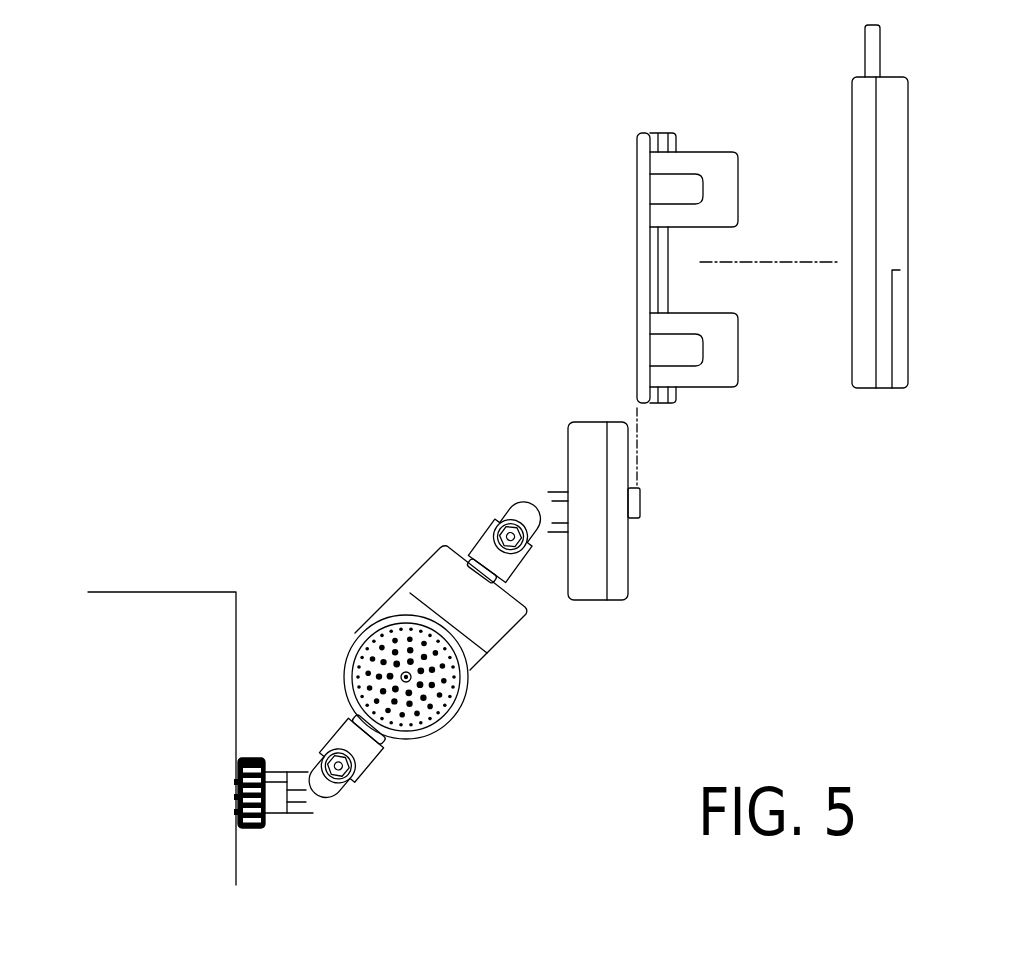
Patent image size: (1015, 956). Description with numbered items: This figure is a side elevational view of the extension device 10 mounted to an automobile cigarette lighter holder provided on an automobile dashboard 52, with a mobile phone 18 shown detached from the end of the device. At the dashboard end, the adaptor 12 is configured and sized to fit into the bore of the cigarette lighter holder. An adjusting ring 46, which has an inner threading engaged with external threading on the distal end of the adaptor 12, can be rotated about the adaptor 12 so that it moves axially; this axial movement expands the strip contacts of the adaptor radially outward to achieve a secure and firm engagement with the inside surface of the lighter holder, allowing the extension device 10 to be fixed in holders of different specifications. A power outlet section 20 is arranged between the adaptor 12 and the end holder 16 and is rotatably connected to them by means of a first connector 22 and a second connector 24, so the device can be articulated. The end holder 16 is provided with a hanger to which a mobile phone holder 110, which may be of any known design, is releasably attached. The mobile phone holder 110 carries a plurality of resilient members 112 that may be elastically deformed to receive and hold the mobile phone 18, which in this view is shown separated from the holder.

The extension device 10 is at (590, 695).
The adaptor 12 is at (290, 817).
The end holder 16 is at (628, 550).
The mobile phone 18 is at (908, 128).
The power outlet section 20 is at (507, 643).
The first connector 22 is at (375, 768).
The second connector 24 is at (508, 512).
The adjusting ring 46 is at (255, 828).
The automobile dashboard 52 is at (218, 647).
The mobile phone holder 110 is at (670, 135).
The resilient members 112 is at (735, 167).